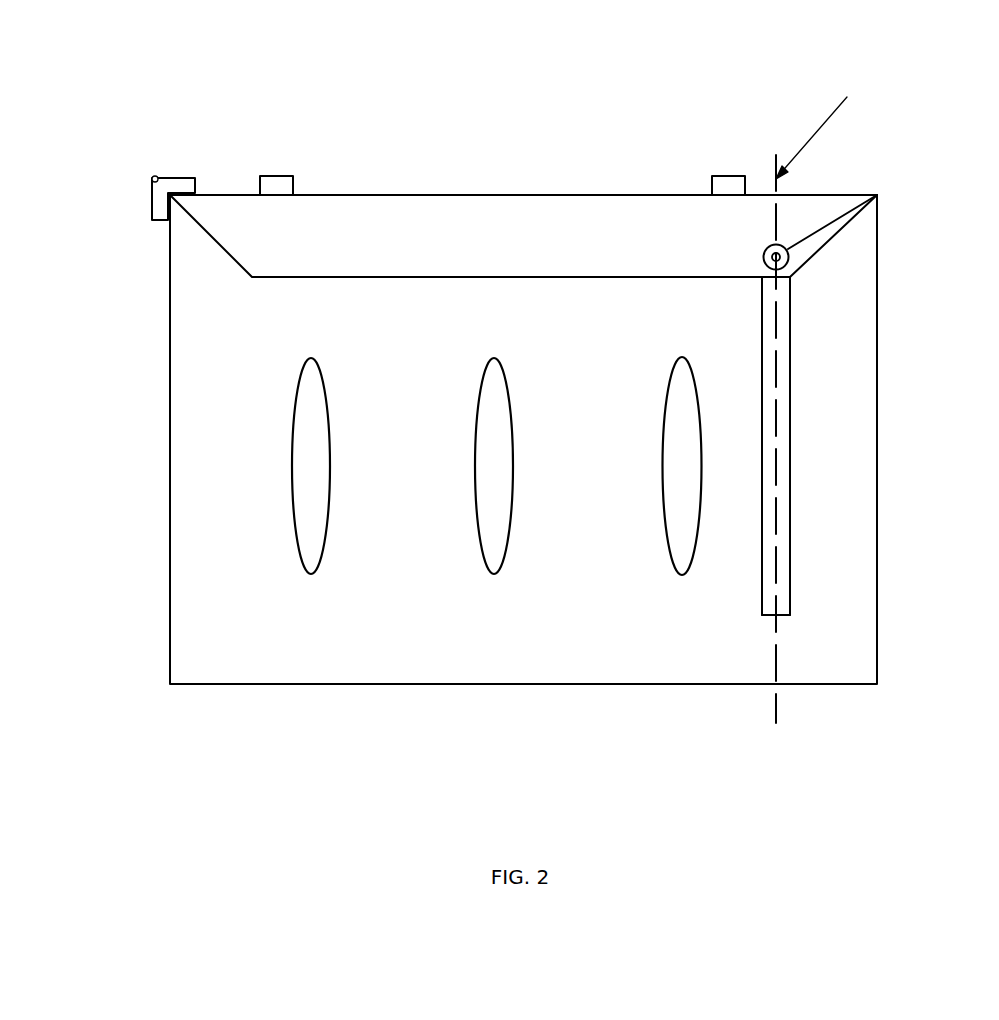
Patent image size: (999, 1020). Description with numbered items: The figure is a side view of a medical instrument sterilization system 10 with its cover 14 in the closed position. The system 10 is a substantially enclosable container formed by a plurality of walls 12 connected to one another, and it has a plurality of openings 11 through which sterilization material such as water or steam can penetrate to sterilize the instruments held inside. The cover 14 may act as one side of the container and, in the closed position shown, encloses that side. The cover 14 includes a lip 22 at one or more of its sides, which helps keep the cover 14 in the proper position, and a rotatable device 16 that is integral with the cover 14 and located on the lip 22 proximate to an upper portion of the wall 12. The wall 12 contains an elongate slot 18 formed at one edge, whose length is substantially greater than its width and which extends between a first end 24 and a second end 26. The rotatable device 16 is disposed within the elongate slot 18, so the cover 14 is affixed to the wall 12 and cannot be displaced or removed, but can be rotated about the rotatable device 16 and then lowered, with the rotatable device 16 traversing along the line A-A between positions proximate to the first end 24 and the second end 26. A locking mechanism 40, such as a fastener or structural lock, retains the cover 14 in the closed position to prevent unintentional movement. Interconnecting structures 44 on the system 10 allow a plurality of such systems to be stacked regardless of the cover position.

The medical instrument sterilization system 10 is at (506, 400).
The openings 11 is at (291, 475).
The walls 12 is at (421, 637).
The cover 14 is at (481, 195).
The rotatable device 16 is at (877, 195).
The elongate slot 18 is at (777, 423).
The lip 22 is at (253, 240).
The first end 24 is at (790, 615).
The second end 26 is at (792, 302).
The locking mechanism 40 is at (173, 178).
The interconnecting structures 44 is at (278, 175).